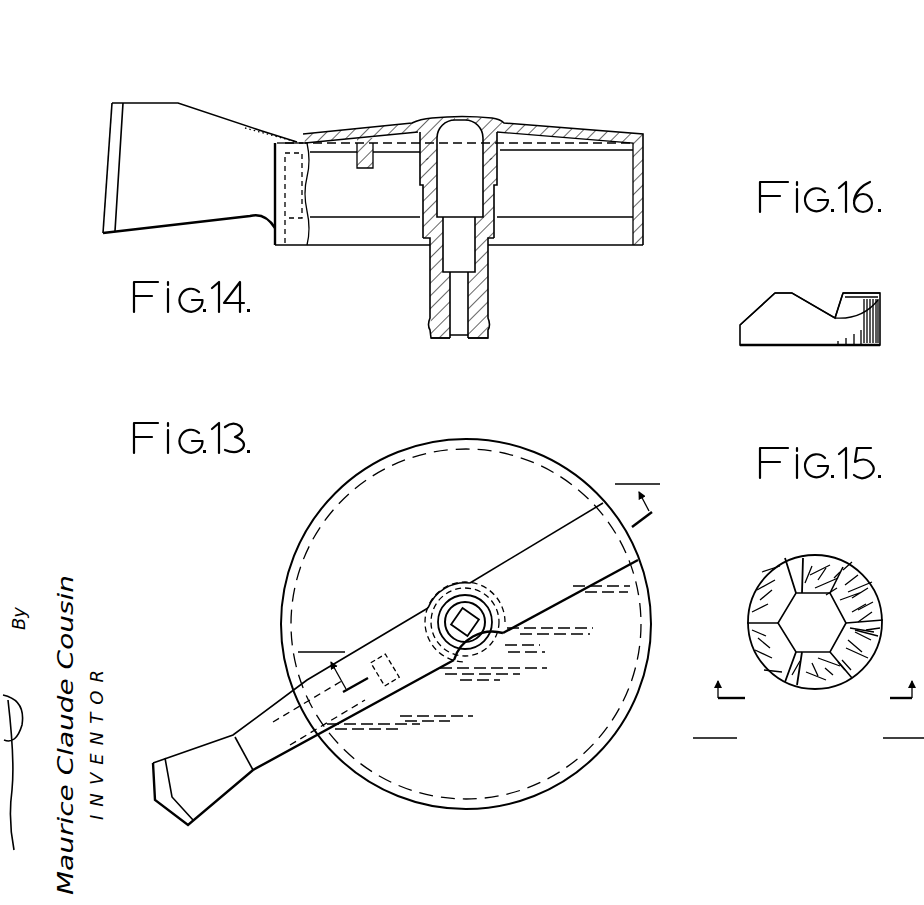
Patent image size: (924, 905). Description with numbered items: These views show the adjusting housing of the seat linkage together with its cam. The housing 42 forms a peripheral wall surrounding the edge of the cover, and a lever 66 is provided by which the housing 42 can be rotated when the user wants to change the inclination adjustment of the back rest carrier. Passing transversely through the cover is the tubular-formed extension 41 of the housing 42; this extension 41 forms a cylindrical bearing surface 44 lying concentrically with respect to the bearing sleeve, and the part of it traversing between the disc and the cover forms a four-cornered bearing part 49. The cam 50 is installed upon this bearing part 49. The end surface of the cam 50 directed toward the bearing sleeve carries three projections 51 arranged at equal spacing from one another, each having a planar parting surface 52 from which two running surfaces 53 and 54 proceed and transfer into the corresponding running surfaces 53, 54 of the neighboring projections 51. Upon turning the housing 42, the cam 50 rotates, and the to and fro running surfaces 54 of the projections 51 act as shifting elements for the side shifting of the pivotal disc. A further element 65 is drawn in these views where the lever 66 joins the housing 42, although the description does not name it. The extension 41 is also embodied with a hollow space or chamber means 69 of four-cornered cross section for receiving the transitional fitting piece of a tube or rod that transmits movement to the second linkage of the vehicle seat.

In FIG. 14, the tubular-formed extension 41 is at (426, 285).
In FIG. 14, the housing 42 is at (574, 114).
In FIG. 13, the housing 42 is at (556, 433).
In FIG. 14, the cylindrical bearing surface 44 is at (490, 292).
In FIG. 14, the four-cornered bearing part 49 is at (498, 208).
In FIG. 13, the four-cornered bearing part 49 is at (502, 647).
In FIG. 16, the cam 50 is at (772, 337).
In FIG. 15, the cam 50 is at (769, 679).
In FIG. 16, the projections 51 is at (800, 290).
In FIG. 15, the projections 51 is at (789, 559).
In FIG. 16, the planar parting surface 52 is at (774, 292).
In FIG. 15, the planar parting surface 52 is at (876, 617).
In FIG. 16, the running surface 53 is at (813, 303).
In FIG. 15, the running surface 53 is at (855, 584).
In FIG. 16, the running surface 54 is at (745, 316).
In FIG. 15, the running surface 54 is at (818, 565).
In FIG. 14, the lug 65 is at (356, 168).
In FIG. 13, the lug 65 is at (383, 652).
In FIG. 14, the lever 66 is at (255, 131).
In FIG. 13, the lever 66 is at (279, 757).
In FIG. 14, the hollow space or chamber means 69 is at (458, 340).
In FIG. 13, the hollow space or chamber means 69 is at (464, 637).